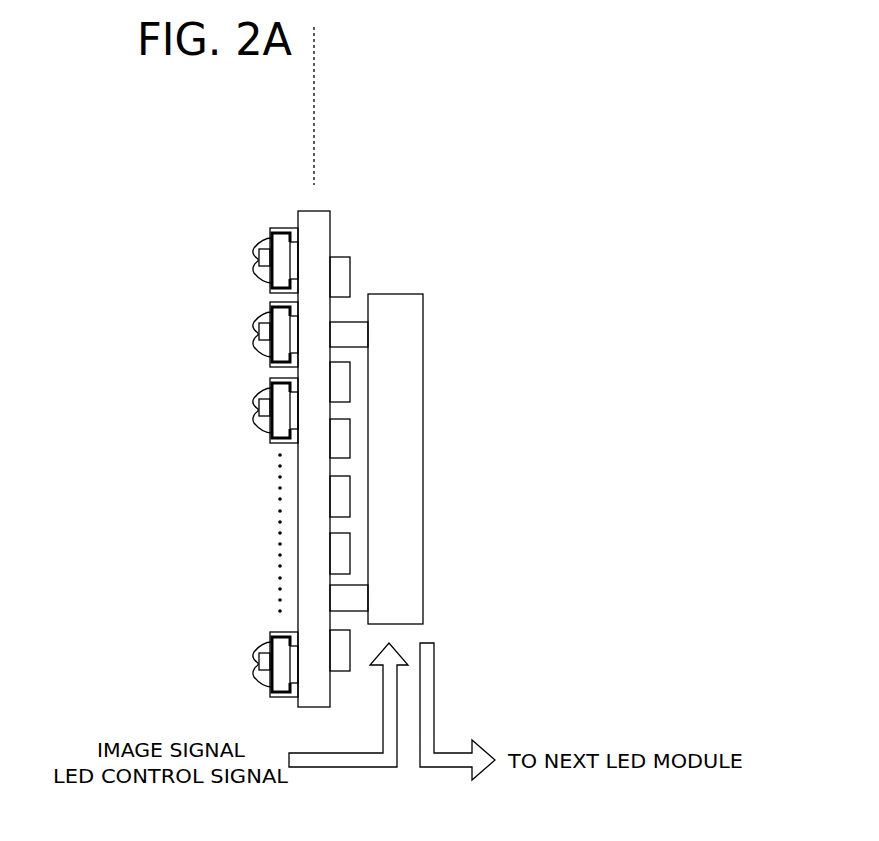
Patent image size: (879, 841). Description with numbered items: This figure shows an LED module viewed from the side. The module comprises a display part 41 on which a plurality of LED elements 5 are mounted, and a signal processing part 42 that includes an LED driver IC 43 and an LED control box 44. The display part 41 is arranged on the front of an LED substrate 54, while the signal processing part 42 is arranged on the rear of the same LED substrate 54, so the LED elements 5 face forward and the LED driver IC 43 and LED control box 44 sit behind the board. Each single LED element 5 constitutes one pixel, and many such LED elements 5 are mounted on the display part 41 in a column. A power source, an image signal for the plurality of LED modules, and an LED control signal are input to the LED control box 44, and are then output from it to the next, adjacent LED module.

The display part 41 is at (207, 386).
The signal processing part 42 is at (427, 376).
The LED element 5 is at (268, 246).
The LED substrate 54 is at (318, 210).
The LED driver IC 43 is at (350, 272).
The LED control box 44 is at (423, 333).